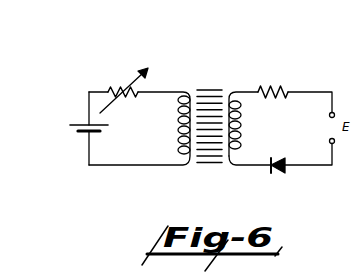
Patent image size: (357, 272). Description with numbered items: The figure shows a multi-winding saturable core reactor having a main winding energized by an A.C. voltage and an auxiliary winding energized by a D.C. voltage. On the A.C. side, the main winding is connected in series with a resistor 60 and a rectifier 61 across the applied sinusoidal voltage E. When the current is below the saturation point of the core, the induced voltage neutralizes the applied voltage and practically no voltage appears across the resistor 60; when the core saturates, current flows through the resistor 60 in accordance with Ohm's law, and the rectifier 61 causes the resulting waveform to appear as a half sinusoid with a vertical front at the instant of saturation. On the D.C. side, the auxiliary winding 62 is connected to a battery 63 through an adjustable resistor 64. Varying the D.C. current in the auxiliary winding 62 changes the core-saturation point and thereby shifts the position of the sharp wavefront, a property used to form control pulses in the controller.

The resistor 60 is at (272, 84).
The rectifier 61 is at (275, 177).
The auxiliary winding 62 is at (178, 133).
The battery 63 is at (83, 139).
The adjustable resistor 64 is at (120, 85).